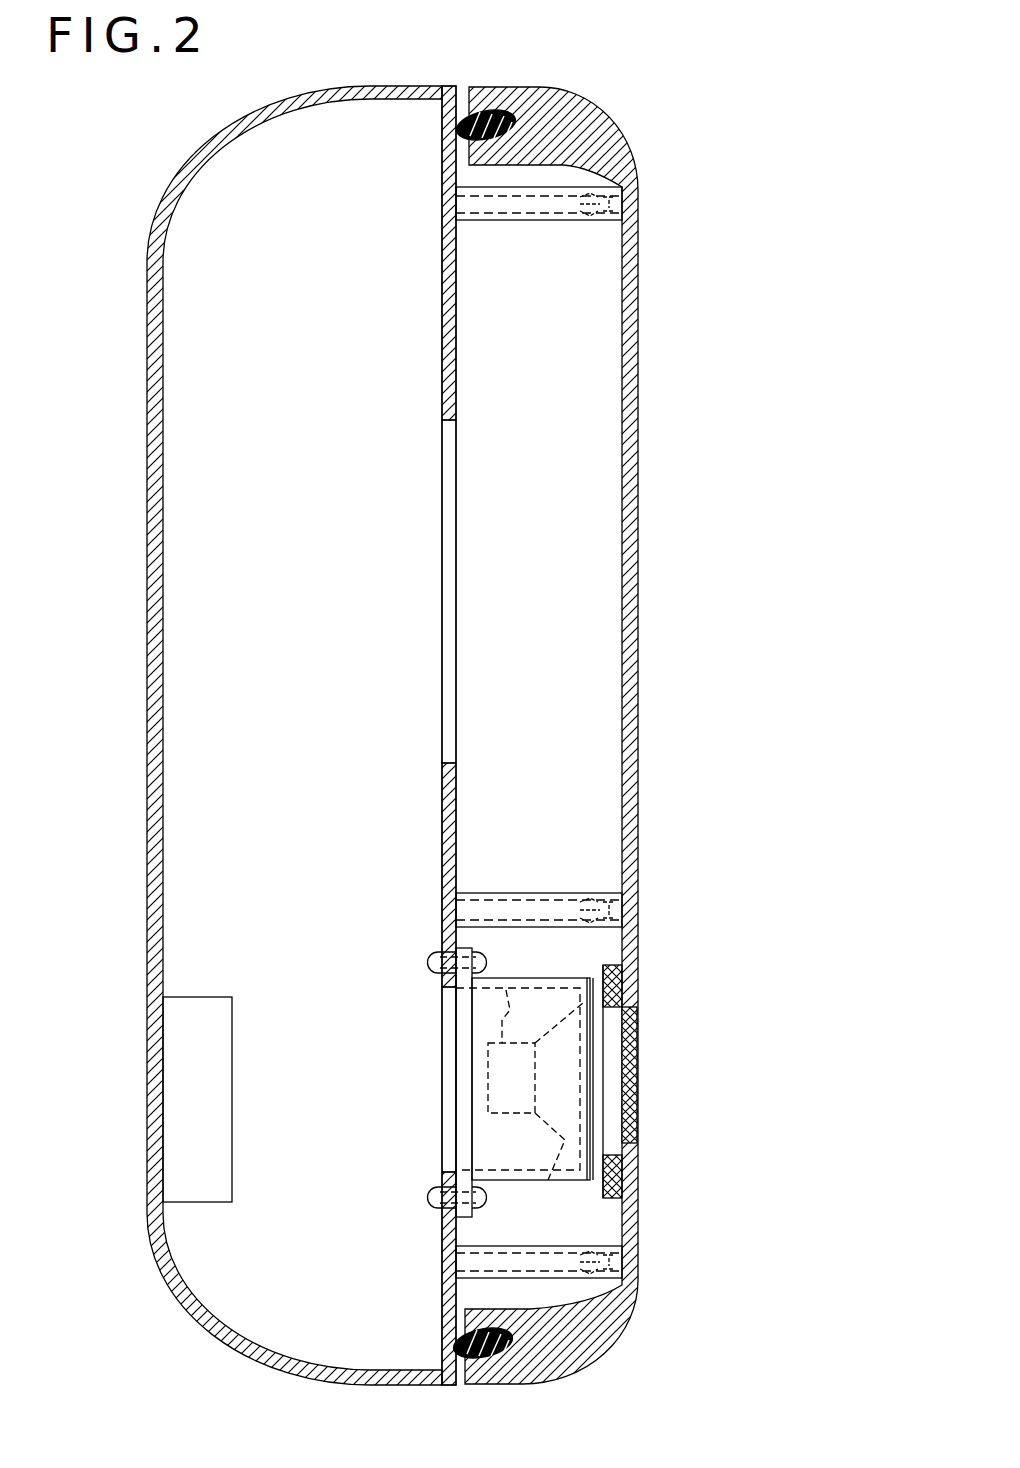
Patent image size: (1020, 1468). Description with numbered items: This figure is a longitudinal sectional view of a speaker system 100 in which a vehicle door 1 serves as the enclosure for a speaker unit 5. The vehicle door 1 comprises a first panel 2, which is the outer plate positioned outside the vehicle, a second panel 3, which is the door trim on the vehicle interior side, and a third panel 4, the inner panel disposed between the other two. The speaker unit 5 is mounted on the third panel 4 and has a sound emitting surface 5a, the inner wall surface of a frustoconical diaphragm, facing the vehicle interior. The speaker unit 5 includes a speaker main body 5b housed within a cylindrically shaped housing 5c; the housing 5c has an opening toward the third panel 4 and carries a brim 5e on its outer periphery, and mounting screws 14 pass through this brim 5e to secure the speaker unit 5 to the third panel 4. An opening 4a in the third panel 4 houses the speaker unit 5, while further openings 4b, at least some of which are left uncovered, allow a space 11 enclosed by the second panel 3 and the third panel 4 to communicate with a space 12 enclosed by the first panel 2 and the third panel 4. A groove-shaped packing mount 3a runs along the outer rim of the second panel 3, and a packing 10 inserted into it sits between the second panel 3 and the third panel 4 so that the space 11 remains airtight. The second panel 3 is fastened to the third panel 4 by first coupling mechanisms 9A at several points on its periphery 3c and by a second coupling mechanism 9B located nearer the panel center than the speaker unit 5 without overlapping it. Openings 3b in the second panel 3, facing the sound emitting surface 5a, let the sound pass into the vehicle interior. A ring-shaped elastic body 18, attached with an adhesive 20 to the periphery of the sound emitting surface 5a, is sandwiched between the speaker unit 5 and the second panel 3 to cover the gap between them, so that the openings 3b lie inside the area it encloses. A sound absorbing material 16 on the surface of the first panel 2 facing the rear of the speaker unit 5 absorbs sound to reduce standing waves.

The speaker system 100 is at (770, 168).
The vehicle door 1 is at (168, 184).
The first panel 2 is at (152, 516).
The second panel 3 is at (630, 513).
The packing mount 3a is at (520, 126).
The openings 3b is at (630, 1082).
The periphery 3c is at (624, 165).
The third panel 4 is at (440, 352).
The opening 4a is at (442, 1063).
The openings 4b is at (444, 555).
The speaker unit 5 is at (472, 1112).
The sound emitting surface 5a is at (547, 1160).
The speaker main body 5b is at (506, 988).
The housing 5c is at (500, 1163).
The brim 5e is at (458, 1152).
The first coupling mechanisms 9A is at (538, 205).
The second coupling mechanism 9B is at (532, 897).
The packing 10 is at (456, 137).
The space 11 is at (543, 476).
The space 12 is at (298, 458).
The mounting screws 14 is at (427, 962).
The sound absorbing material 16 is at (195, 1017).
The elastic body 18 is at (624, 985).
The adhesive 20 is at (603, 975).